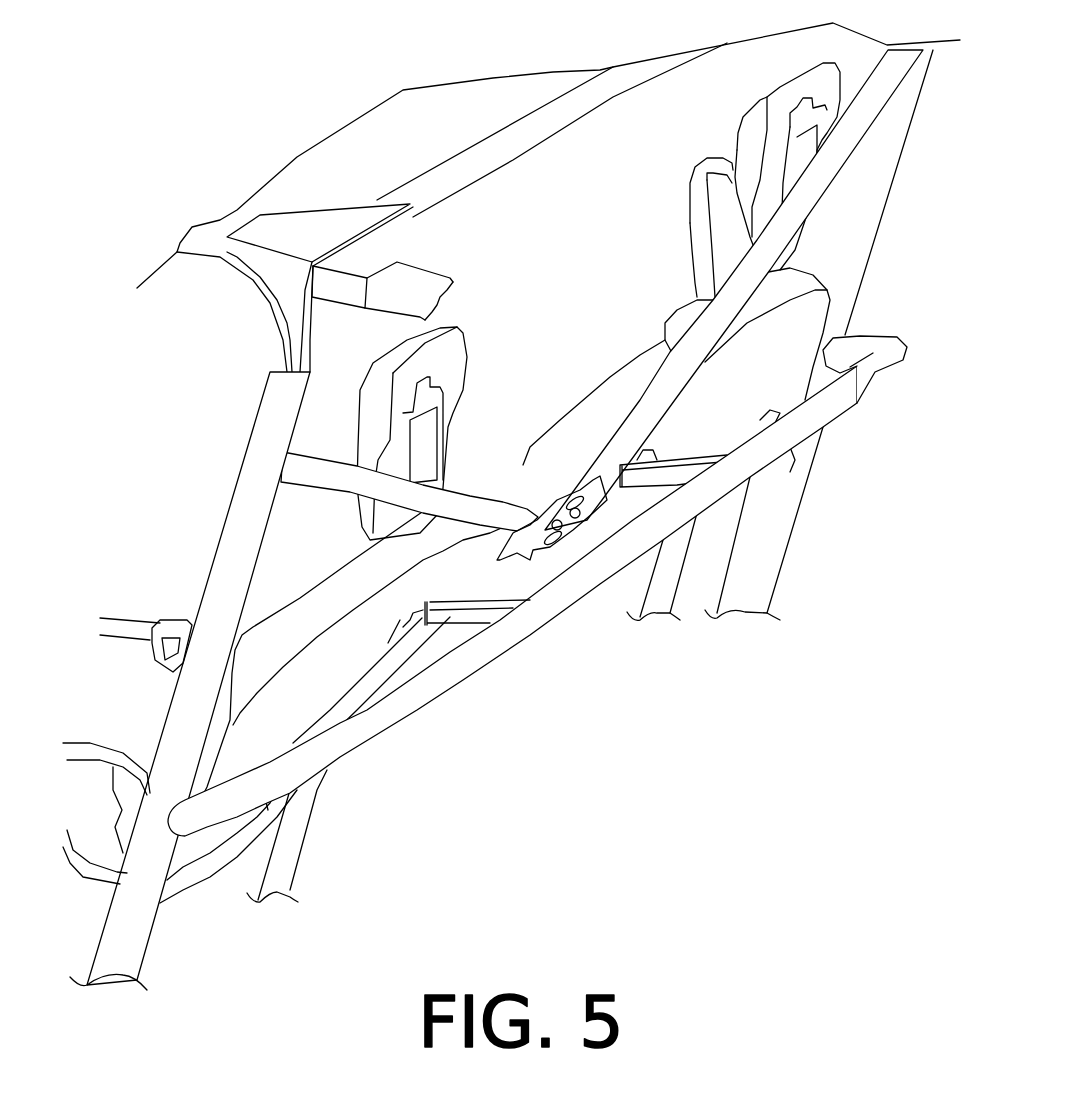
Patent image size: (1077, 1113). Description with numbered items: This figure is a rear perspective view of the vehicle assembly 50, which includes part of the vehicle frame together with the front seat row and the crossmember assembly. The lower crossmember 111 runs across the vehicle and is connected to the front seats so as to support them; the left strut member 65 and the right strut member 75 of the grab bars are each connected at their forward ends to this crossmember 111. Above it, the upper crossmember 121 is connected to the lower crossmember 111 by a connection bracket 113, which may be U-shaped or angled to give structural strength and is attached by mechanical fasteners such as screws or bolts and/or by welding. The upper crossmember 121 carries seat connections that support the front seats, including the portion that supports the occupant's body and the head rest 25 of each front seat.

The head rest 25 is at (766, 106).
The vehicle assembly 50 is at (163, 492).
The left strut member 65 is at (458, 612).
The right strut member 75 is at (677, 477).
The crossmember 111 is at (780, 460).
The connection bracket 113 is at (532, 528).
The crossmember 121 is at (857, 122).